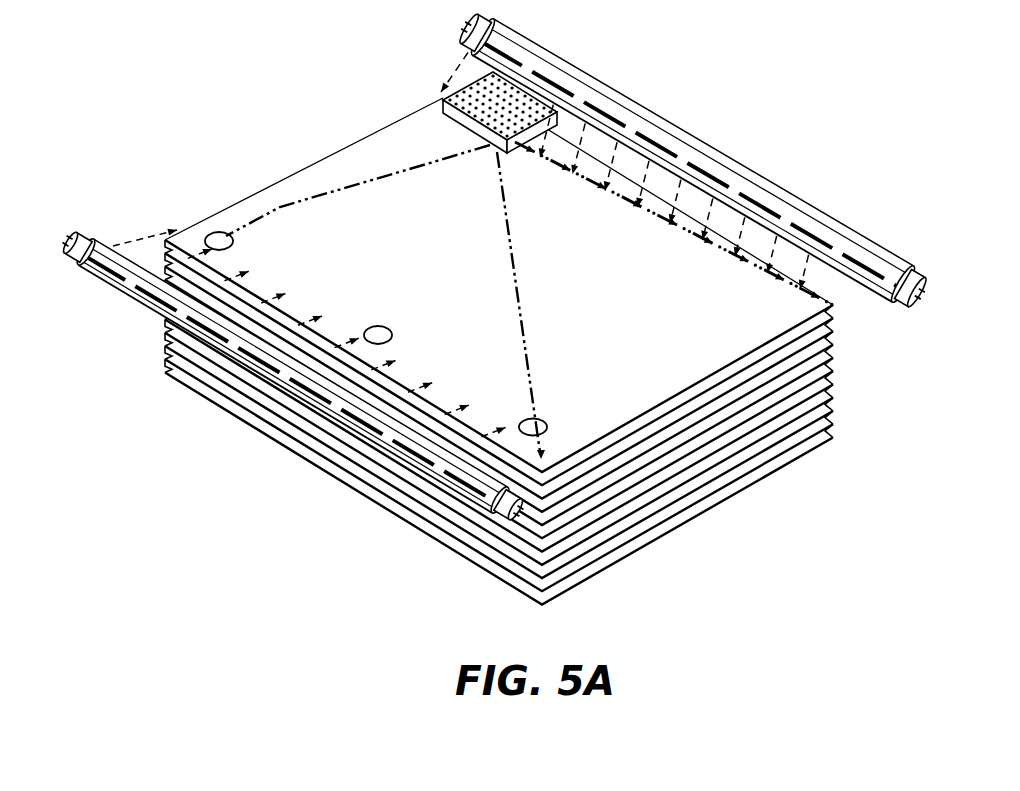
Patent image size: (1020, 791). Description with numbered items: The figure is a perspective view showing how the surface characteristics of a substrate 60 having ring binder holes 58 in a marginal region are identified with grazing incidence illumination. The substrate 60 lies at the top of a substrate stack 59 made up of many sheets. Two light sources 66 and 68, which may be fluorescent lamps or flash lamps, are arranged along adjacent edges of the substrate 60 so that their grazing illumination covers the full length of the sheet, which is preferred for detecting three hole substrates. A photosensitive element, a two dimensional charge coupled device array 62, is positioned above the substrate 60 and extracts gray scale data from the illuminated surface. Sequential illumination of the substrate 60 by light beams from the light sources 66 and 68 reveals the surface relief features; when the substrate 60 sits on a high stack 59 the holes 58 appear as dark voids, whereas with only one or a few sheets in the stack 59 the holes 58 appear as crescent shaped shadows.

The holes 58 is at (219, 241).
The substrate stack 59 is at (843, 305).
The substrate 60 is at (306, 150).
The charge coupled device (CCD) array 62 is at (443, 110).
The light source 66 is at (698, 148).
The light source 68 is at (84, 248).